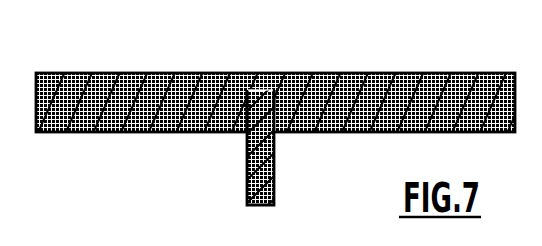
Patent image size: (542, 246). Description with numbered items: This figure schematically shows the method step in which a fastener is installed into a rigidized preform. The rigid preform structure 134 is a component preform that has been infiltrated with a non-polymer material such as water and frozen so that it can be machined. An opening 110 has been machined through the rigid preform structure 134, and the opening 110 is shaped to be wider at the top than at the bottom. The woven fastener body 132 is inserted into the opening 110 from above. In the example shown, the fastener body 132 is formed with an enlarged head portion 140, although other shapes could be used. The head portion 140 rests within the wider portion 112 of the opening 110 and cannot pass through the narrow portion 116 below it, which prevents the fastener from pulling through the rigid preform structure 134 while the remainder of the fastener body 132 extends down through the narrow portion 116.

The rigid preform structure 134 is at (426, 90).
The woven fastener body 132 is at (275, 187).
The opening 110 is at (246, 96).
The wider portion 112 is at (275, 96).
The head portion 140 is at (262, 95).
The narrow portion 116 is at (246, 114).